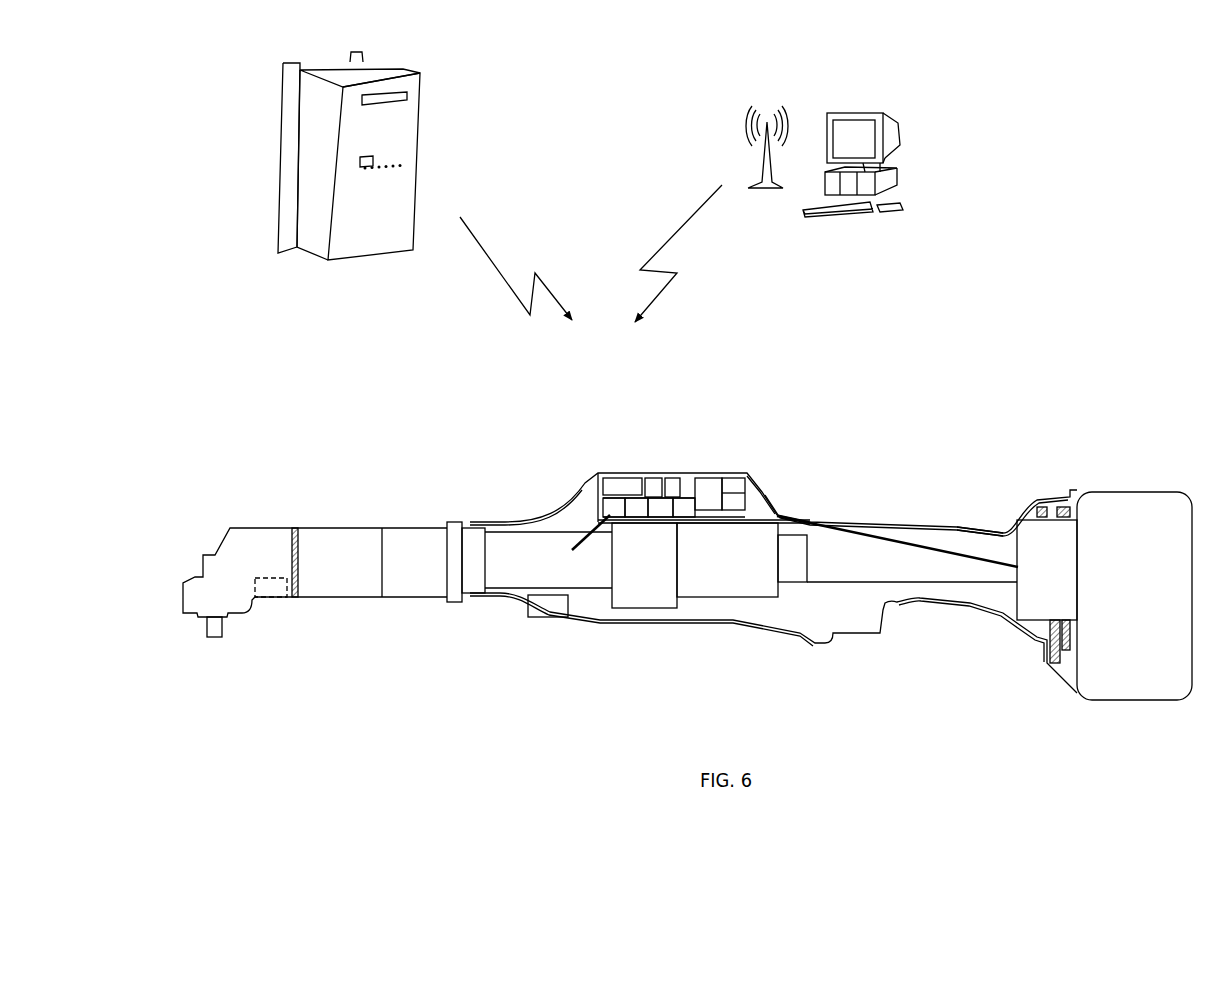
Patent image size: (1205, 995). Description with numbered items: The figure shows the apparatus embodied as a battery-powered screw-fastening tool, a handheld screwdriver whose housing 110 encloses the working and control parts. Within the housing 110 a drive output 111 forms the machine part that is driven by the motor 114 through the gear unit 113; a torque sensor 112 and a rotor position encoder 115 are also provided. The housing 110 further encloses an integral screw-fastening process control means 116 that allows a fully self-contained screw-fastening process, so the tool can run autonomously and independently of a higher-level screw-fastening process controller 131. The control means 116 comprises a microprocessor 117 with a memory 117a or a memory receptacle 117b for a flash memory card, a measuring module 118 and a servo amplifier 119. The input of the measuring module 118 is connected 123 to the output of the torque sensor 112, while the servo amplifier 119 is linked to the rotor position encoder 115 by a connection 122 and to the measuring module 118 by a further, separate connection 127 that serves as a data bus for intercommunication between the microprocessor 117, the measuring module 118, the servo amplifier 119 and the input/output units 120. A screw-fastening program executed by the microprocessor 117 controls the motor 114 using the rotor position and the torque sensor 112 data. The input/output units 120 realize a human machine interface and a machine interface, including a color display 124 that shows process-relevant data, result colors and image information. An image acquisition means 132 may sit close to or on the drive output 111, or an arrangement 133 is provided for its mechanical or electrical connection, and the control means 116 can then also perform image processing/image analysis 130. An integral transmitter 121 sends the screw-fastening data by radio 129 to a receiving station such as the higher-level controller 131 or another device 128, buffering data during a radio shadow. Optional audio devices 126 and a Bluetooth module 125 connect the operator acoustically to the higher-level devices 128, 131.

The housing 110 is at (833, 510).
The drive output 111 is at (307, 552).
The torque sensor 112 is at (495, 550).
The gear unit 113 is at (662, 597).
The motor 114 is at (768, 582).
The rotor position encoder 115 is at (840, 560).
The screw-fastening process control means 116 is at (568, 517).
The microprocessor 117 is at (635, 512).
The memory 117a is at (655, 492).
The memory receptacle 117b is at (677, 492).
The measuring module 118 is at (613, 512).
The servo amplifier 119 is at (1050, 537).
The input/output units 120 is at (658, 512).
The transmitter 121 is at (708, 492).
The connection 122 is at (970, 585).
The connection 123 is at (582, 540).
The color display 124 is at (685, 512).
The Bluetooth module 125 is at (735, 487).
The audio devices 126 is at (760, 495).
The connection 127 is at (972, 527).
The device 128 is at (415, 140).
The radio 129 is at (487, 252).
The image processing/image analysis 130 is at (613, 487).
The higher-level screw-fastening process controller 131 is at (807, 122).
The image acquisition means 132 is at (415, 653).
The arrangement 133 is at (270, 585).